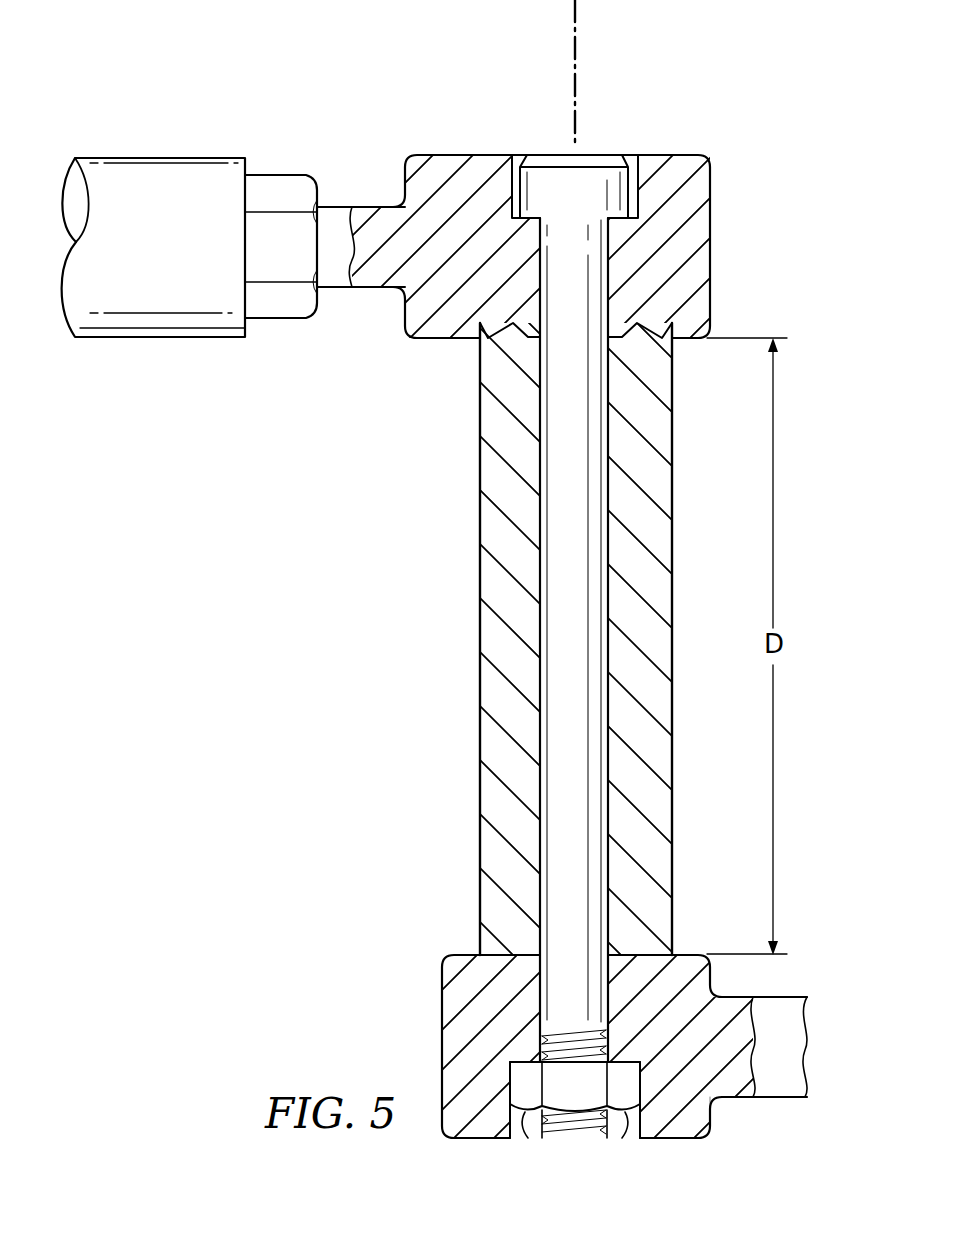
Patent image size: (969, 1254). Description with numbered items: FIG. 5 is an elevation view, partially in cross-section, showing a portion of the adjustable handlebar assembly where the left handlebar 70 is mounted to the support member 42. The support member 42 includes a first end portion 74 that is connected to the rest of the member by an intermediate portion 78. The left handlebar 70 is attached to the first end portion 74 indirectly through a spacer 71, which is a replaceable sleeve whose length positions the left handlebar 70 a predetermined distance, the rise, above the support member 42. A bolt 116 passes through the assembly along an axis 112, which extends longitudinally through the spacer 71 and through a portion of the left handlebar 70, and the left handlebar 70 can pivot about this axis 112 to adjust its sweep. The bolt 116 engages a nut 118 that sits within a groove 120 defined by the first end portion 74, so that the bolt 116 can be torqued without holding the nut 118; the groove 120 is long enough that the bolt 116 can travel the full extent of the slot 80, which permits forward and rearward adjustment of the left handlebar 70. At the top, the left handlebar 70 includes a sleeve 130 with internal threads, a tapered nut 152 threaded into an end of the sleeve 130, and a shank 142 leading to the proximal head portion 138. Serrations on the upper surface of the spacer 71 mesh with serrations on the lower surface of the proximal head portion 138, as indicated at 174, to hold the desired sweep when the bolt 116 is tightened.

The axis 112 is at (575, 60).
The left handlebar 70 is at (191, 209).
The sleeve 130 is at (182, 157).
The tapered nut 152 is at (280, 175).
The shank 142 is at (338, 207).
The bolt 116 is at (548, 183).
The proximal head portion 138 is at (712, 230).
The meshing of serrations 174 is at (468, 350).
The spacer 71 is at (673, 700).
The slot 80 is at (552, 962).
The first end portion 74 is at (682, 1140).
The nut 118 is at (527, 1138).
The groove 120 is at (625, 1138).
The support member 42 is at (740, 1110).
The intermediate portion 78 is at (783, 1100).